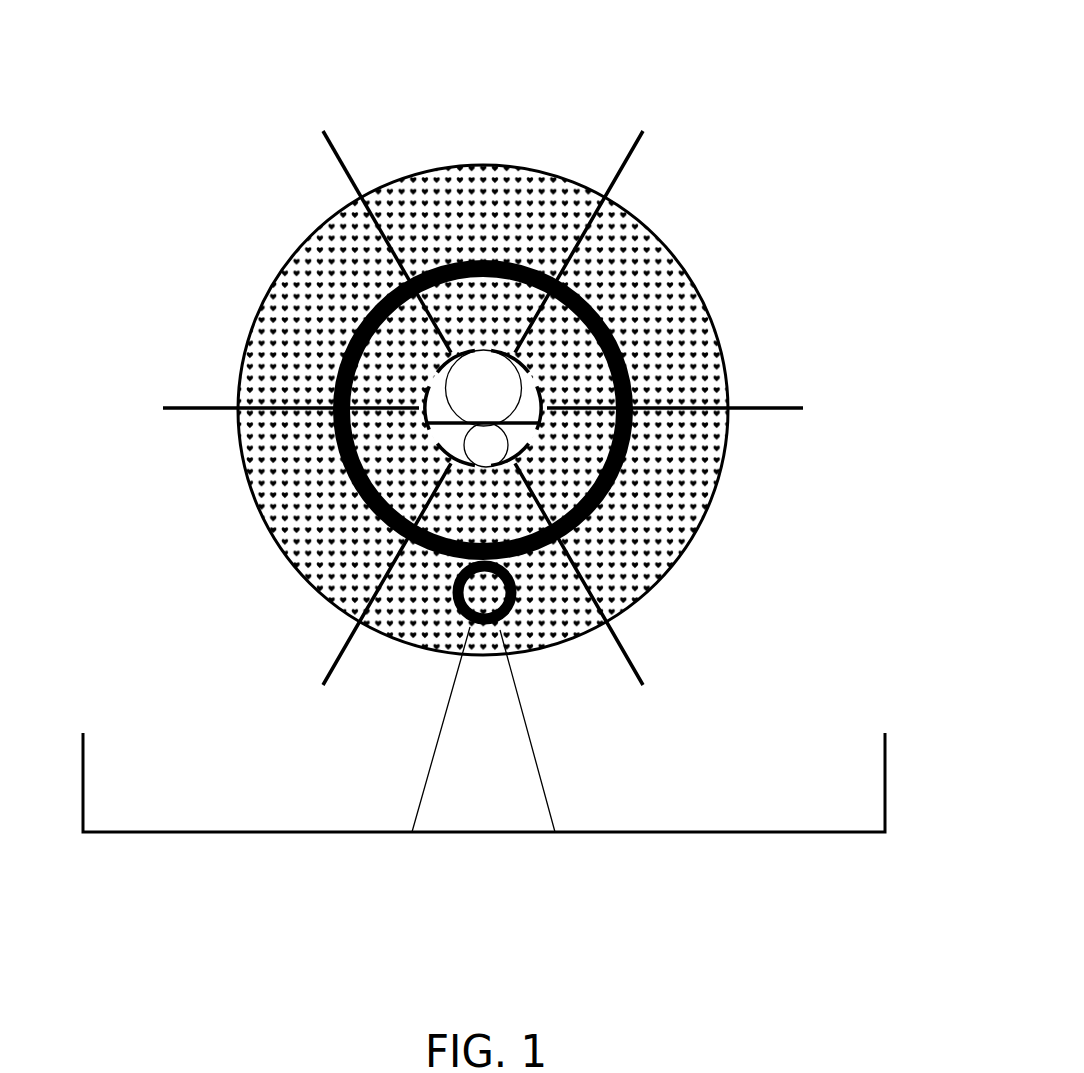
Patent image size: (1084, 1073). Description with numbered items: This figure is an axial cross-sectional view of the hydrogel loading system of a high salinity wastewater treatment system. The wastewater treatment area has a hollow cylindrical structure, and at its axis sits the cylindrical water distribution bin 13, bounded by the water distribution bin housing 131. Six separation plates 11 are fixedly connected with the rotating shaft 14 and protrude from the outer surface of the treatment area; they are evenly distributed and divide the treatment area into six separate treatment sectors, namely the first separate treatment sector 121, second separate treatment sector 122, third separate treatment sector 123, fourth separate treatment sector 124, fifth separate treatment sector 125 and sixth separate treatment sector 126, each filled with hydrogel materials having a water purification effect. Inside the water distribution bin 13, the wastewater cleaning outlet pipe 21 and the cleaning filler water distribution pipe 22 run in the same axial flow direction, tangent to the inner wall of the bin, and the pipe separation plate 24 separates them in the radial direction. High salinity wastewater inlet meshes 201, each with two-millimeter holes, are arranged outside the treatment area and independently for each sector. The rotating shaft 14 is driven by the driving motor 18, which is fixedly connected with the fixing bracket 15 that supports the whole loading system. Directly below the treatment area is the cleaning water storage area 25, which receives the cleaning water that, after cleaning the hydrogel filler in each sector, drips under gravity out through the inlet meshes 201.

The separation plate 11 is at (333, 162).
The high salinity wastewater inlet mesh 201 is at (473, 160).
The water distribution bin housing 131 is at (613, 300).
The wastewater cleaning outlet pipe 21 is at (293, 250).
The first separate treatment sector 121 is at (483, 212).
The second separate treatment sector 122 is at (628, 269).
The third separate treatment sector 123 is at (628, 546).
The fourth separate treatment sector 124 is at (512, 597).
The fifth separate treatment sector 125 is at (337, 546).
The sixth separate treatment sector 126 is at (337, 269).
The water distribution bin 13 is at (480, 383).
The rotating shaft 14 is at (640, 555).
The pipe separation plate 24 is at (300, 488).
The cleaning filler water distribution pipe 22 is at (300, 563).
The cleaning water storage area 25 is at (775, 832).
The fixing bracket 15 is at (532, 748).
The driving motor 18 is at (485, 618).